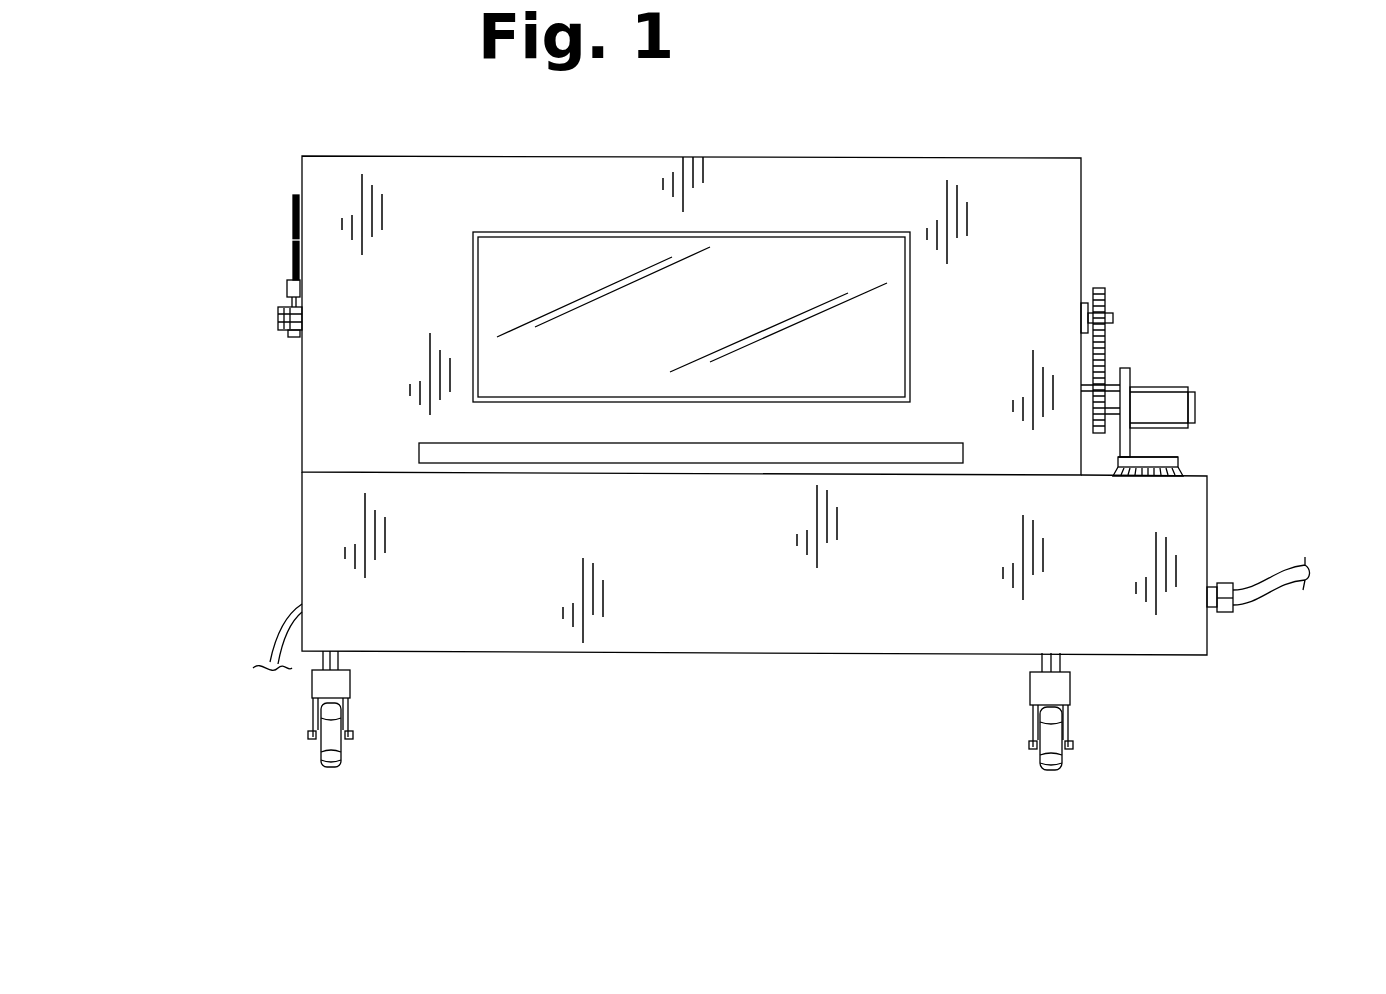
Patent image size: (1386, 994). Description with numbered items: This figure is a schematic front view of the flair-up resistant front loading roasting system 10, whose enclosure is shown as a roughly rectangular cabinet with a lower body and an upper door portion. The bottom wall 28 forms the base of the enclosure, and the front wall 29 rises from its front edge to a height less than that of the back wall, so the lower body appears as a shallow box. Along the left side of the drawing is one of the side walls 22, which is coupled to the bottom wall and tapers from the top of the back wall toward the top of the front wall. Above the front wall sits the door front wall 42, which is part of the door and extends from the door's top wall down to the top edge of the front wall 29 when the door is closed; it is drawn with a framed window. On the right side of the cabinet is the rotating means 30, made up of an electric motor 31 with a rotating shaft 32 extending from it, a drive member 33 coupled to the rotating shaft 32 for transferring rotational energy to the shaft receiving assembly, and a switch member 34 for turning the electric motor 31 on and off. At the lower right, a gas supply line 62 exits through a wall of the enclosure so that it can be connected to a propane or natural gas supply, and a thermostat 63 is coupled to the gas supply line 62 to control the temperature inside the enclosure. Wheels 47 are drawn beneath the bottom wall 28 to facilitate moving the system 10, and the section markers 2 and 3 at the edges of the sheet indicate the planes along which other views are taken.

The section line 2- 2 is at (205, 253).
The section line 3- 3 is at (1335, 260).
The flair-up resistant front loading roasting system 10 is at (767, 421).
The side wall 22 is at (284, 546).
The bottom wall 28 is at (754, 615).
The front wall 29 is at (733, 603).
The rotating means 30 is at (1204, 349).
The electric motor 31 is at (1180, 400).
The rotating shaft 32 is at (1110, 408).
The drive member 33 is at (1105, 345).
The switch member 34 is at (1198, 475).
The door front wall 42 is at (810, 218).
The caster 47 is at (1043, 697).
The gas supply line 62 is at (1262, 584).
The thermostat 63 is at (1155, 462).